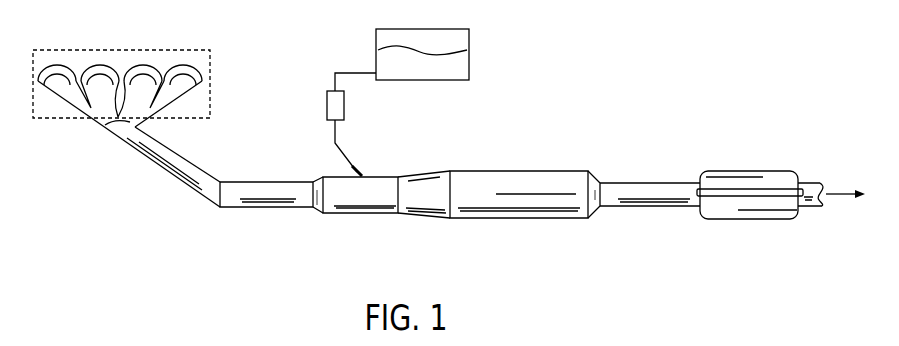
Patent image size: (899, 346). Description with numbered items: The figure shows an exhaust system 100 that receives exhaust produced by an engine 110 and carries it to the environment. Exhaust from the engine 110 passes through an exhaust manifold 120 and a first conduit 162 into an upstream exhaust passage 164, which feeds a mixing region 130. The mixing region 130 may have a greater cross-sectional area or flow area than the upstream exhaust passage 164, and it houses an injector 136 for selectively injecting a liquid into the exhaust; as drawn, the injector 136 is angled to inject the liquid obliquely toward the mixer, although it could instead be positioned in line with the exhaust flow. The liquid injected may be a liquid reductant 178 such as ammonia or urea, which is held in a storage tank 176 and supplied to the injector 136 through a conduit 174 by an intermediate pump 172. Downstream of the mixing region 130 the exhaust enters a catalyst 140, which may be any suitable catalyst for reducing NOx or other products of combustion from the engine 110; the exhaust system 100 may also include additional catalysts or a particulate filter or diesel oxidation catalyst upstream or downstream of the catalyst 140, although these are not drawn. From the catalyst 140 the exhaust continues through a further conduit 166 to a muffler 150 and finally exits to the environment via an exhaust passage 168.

The exhaust system 100 is at (113, 191).
The engine 110 is at (213, 80).
The exhaust manifold 120 is at (88, 124).
The mixing region 130 is at (327, 220).
The injector 136 is at (360, 167).
The catalyst 140 is at (528, 170).
The muffler 150 is at (752, 170).
The exhaust conduit 162 is at (172, 177).
The upstream exhaust passage 164 is at (272, 181).
The exhaust conduit 166 is at (641, 182).
The exhaust passage 168 is at (806, 182).
The intermediate pump 172 is at (327, 105).
The conduit 174 is at (363, 72).
The storage tank 176 is at (470, 63).
The liquid reductant 178 is at (412, 66).